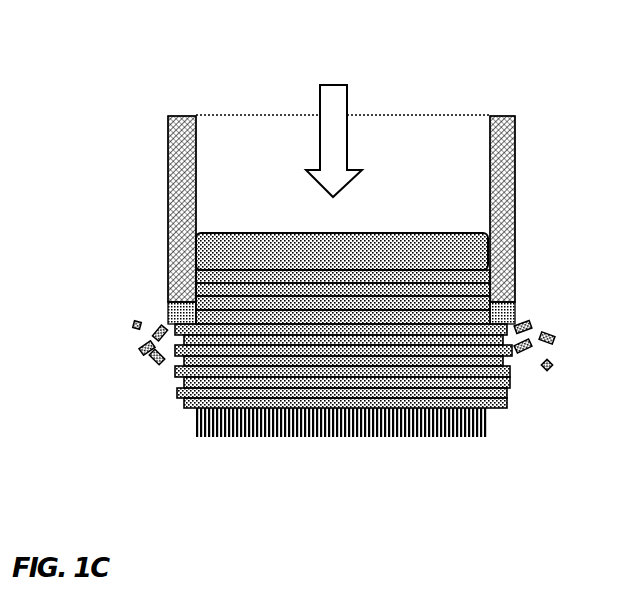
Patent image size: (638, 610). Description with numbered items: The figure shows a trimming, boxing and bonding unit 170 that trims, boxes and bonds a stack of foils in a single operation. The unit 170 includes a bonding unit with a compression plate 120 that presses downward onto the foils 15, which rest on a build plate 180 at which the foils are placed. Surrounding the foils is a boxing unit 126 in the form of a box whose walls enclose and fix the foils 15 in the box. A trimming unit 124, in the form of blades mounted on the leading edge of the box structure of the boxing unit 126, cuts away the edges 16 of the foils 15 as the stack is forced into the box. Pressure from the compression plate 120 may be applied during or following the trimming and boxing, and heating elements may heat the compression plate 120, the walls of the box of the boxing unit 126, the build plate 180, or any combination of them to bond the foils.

The trimming, boxing and bonding unit 170 is at (178, 72).
The boxing unit 126 is at (182, 152).
The trimming unit 124 is at (172, 308).
The compression plate 120 is at (208, 257).
The foils 15 is at (182, 382).
The edges of foils 16 is at (122, 345).
The build plate 180 is at (207, 428).